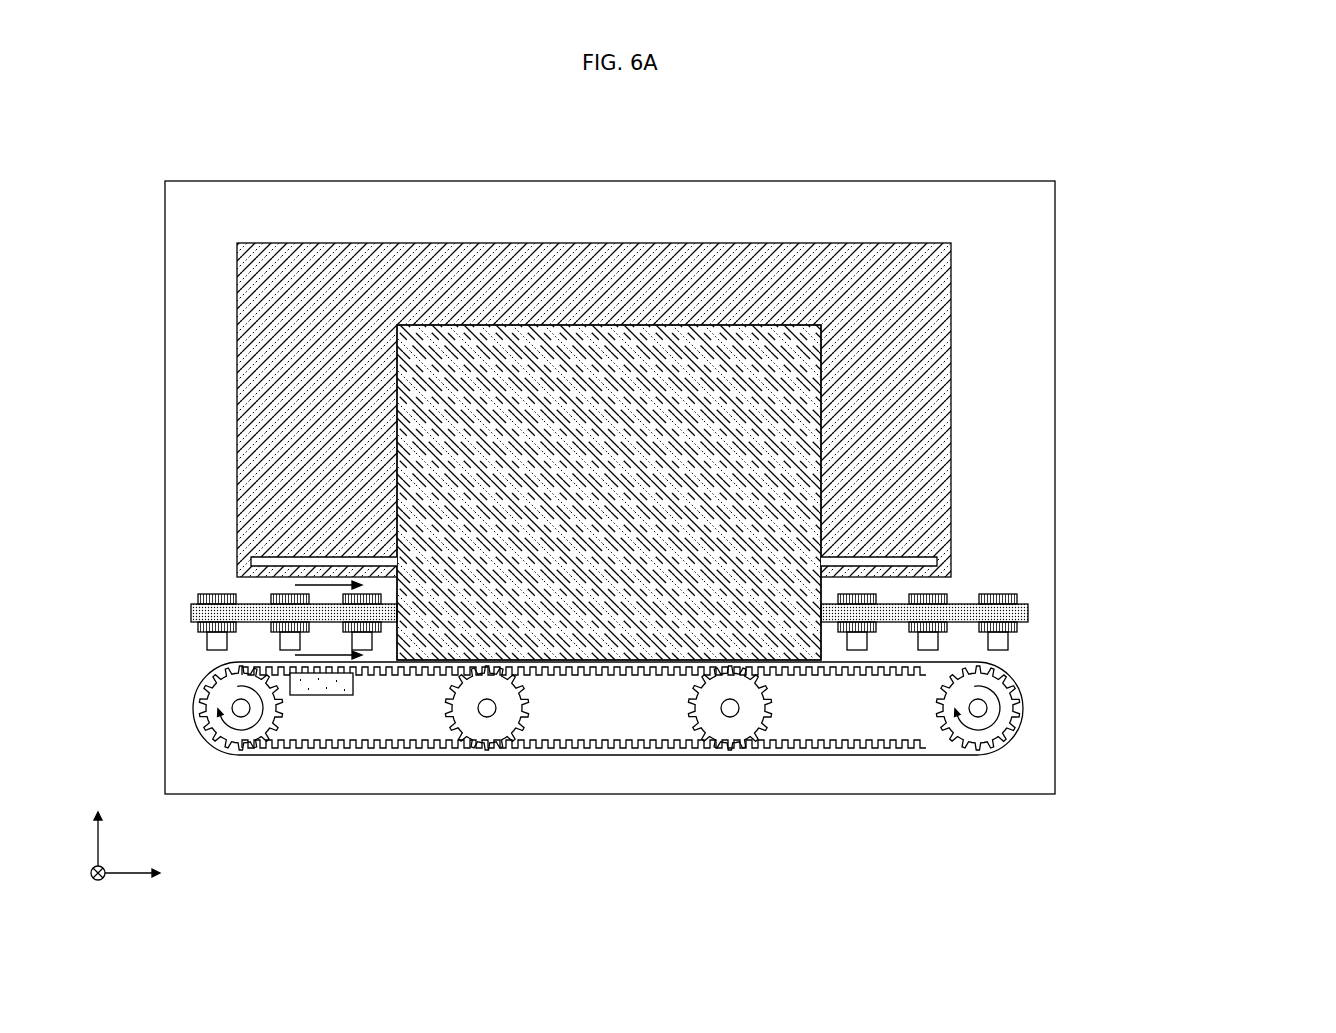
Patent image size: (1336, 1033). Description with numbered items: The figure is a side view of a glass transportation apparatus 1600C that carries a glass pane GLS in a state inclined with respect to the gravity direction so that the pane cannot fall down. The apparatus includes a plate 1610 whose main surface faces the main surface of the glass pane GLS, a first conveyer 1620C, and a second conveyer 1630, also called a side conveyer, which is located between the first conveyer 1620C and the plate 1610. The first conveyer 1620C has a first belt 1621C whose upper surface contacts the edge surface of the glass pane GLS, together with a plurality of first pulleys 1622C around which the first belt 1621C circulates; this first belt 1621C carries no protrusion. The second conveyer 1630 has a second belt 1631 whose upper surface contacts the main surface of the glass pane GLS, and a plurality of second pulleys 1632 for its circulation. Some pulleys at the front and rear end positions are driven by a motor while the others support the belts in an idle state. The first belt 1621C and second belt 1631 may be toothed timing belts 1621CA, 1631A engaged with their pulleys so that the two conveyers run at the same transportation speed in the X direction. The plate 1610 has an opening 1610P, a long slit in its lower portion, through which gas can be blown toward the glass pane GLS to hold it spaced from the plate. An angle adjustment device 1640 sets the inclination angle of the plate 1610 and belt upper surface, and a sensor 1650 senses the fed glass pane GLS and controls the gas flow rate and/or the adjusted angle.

The glass transportation apparatus 1600C is at (1075, 124).
The angle adjustment device 1640 is at (1035, 293).
The plate 1610 is at (951, 337).
The glass pane GLS is at (803, 385).
The opening 1610P is at (928, 559).
The second conveyer 1630 is at (744, 617).
The second belt 1631 is at (713, 617).
The timing belt 1631A is at (1030, 608).
The second pulleys 1632 is at (1020, 630).
The first conveyer 1620C is at (764, 708).
The first belt 1621C is at (726, 708).
The timing belt 1621CA is at (1018, 683).
The first pulleys 1622C is at (1010, 705).
The sensor 1650 is at (340, 682).